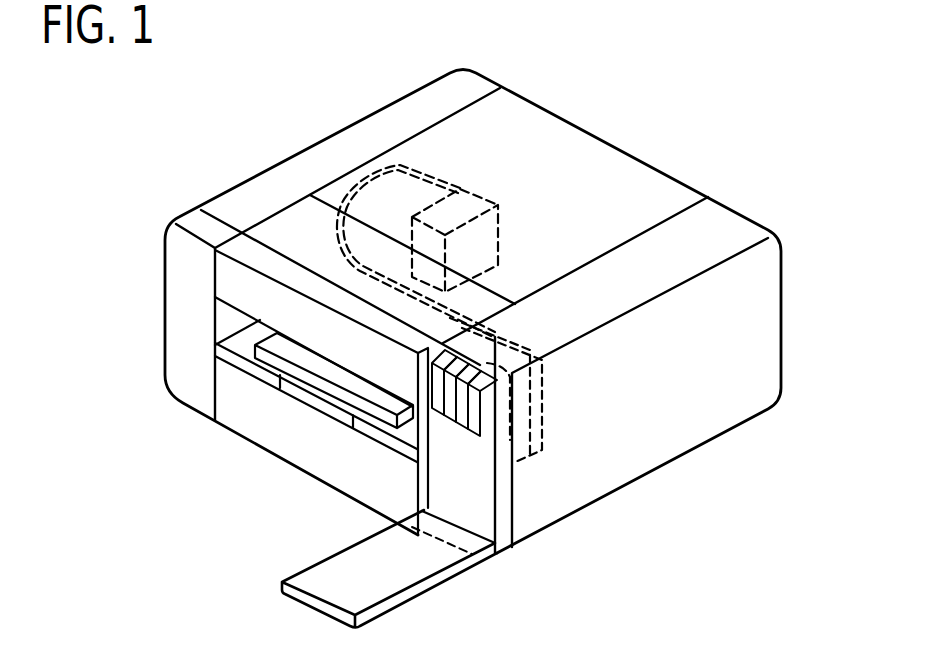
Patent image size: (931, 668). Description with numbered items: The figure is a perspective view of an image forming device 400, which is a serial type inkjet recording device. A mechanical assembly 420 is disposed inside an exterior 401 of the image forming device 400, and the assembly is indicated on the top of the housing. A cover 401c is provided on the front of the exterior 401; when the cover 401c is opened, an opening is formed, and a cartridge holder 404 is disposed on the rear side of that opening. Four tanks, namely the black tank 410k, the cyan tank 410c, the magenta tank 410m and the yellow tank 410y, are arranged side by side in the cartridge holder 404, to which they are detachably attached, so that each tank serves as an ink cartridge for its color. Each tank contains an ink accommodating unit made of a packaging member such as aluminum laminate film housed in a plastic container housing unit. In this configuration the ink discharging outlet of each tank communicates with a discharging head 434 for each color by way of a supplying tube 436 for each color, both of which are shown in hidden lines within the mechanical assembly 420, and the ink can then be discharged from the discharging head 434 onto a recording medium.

The image forming device 400 is at (703, 96).
The exterior 401 is at (285, 167).
The cover 401c is at (423, 588).
The cartridge holder 404 is at (543, 413).
The tank 410k is at (453, 415).
The tank 410c is at (467, 423).
The tank 410m is at (478, 430).
The tank 410y is at (488, 437).
The mechanical assembly 420 is at (553, 199).
The discharging head 434 is at (503, 168).
The supplying tube 436 is at (378, 172).